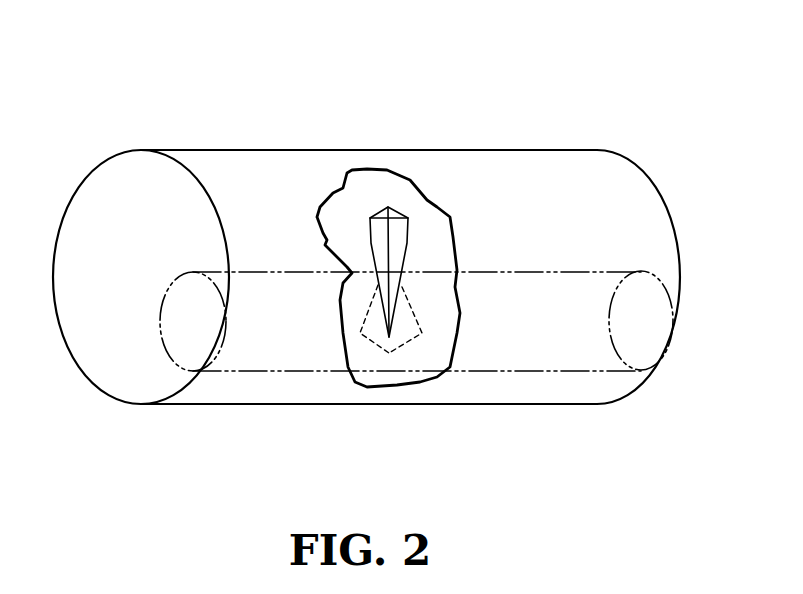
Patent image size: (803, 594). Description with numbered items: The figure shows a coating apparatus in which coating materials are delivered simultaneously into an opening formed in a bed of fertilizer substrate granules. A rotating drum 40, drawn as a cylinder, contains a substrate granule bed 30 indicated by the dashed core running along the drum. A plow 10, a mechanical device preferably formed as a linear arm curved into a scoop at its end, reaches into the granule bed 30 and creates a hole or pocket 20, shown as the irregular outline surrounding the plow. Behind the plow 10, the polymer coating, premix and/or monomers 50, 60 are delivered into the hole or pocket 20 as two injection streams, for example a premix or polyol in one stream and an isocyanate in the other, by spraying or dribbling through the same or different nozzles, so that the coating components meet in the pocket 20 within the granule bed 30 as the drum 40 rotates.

The plow 10 is at (383, 208).
The hole or pocket 20 is at (390, 350).
The substrate granule bed 30 is at (192, 302).
The rotating drum 40 is at (548, 97).
The polymer coating, premix and/or monomer injection stream 50 is at (373, 327).
The polymer coating, premix and/or monomer injection stream 60 is at (408, 327).